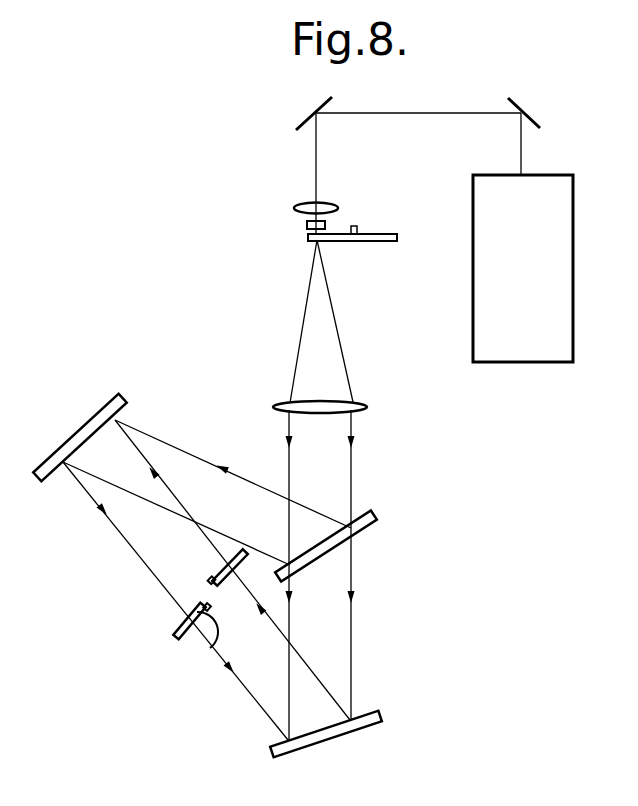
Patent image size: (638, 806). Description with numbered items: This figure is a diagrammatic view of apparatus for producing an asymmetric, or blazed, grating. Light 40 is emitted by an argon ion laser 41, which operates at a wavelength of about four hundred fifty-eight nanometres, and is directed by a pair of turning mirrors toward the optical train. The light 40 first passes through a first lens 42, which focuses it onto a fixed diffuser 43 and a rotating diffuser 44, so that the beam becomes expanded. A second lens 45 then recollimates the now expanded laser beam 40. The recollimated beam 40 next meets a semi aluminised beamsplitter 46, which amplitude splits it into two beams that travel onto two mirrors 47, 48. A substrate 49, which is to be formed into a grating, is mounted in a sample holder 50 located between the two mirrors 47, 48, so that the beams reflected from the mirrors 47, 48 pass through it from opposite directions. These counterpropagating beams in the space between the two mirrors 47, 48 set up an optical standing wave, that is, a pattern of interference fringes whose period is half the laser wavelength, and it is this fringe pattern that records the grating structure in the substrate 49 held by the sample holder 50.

The light 40 is at (462, 112).
The argon ion laser 41 is at (512, 342).
The first lens 42 is at (325, 203).
The fixed diffuser 43 is at (307, 226).
The rotating diffuser 44 is at (332, 241).
The second lens 45 is at (310, 400).
The semi aluminised beamsplitter 46 is at (360, 525).
The mirror 47 is at (338, 732).
The mirror 48 is at (87, 428).
The substrate 49 is at (213, 647).
The sample holder 50 is at (185, 617).